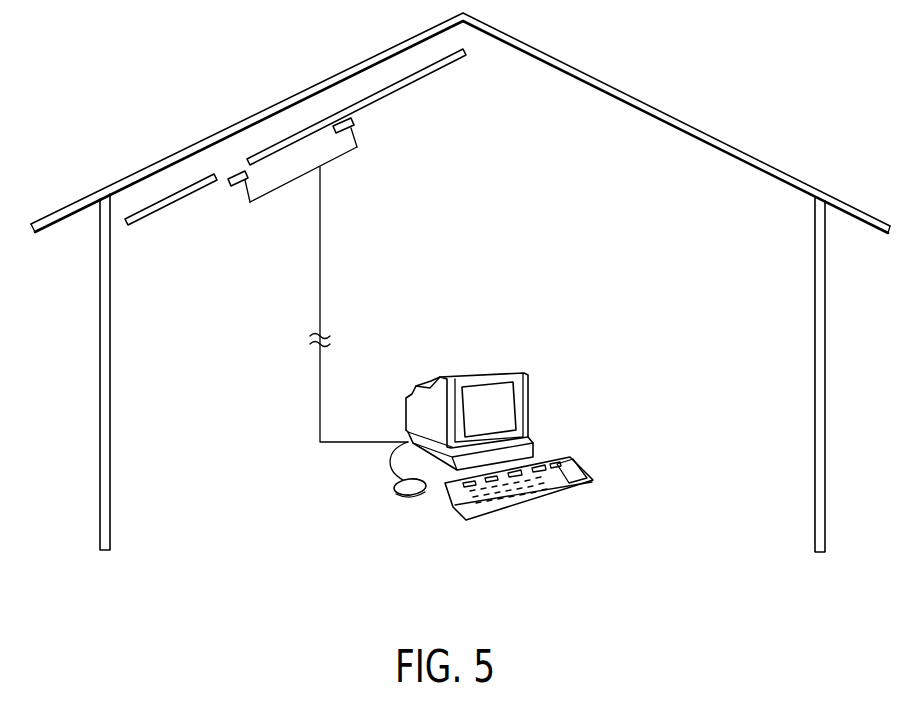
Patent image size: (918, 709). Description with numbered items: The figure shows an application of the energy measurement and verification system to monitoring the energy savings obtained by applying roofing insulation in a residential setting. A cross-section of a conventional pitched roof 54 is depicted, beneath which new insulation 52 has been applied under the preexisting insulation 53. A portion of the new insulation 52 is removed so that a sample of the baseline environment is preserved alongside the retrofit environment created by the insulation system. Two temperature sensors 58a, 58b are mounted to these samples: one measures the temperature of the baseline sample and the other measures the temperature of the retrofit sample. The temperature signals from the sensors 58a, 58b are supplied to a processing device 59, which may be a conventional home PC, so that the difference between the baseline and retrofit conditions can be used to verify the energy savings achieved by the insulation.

The new insulation 52 is at (432, 72).
The preexisting insulation 53 is at (228, 172).
The pitched roof 54 is at (327, 82).
The temperature sensor 58a is at (230, 187).
The temperature sensor 58b is at (352, 133).
The processing device 59 is at (537, 503).